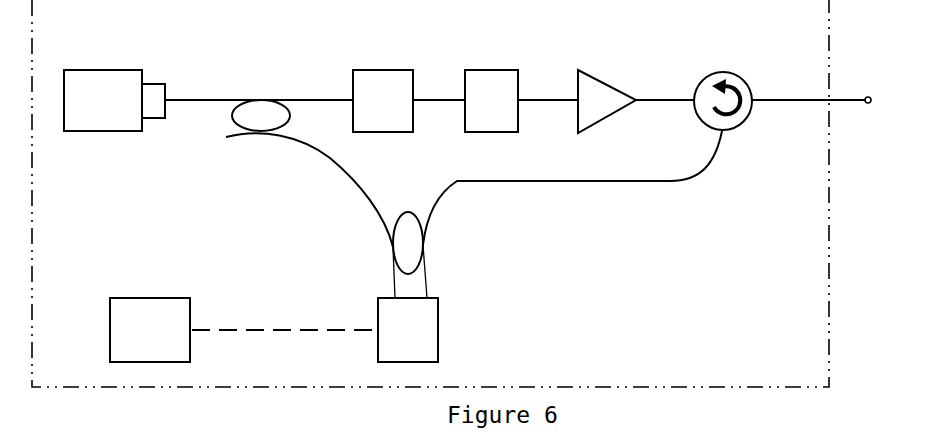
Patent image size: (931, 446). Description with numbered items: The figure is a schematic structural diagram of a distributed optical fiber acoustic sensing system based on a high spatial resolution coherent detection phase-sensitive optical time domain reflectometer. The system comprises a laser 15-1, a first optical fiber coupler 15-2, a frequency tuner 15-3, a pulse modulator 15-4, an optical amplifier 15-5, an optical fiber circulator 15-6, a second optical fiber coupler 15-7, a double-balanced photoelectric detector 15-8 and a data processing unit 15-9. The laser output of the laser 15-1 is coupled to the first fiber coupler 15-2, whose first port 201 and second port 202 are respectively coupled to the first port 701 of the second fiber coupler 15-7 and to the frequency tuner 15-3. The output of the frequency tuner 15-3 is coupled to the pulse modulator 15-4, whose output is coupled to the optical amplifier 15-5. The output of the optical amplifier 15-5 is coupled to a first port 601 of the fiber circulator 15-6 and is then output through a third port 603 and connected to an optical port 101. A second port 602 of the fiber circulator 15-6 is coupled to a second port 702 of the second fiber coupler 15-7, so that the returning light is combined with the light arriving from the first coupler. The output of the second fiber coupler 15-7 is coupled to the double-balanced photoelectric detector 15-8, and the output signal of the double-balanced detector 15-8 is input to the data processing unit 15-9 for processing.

The laser 15-1 is at (85, 70).
The first optical fiber coupler 15-2 is at (252, 98).
The frequency tuner 15-3 is at (386, 70).
The pulse modulator 15-4 is at (485, 70).
The optical amplifier 15-5 is at (601, 68).
The optical fiber circulator 15-6 is at (712, 72).
The second optical fiber coupler 15-7 is at (427, 247).
The double-balanced photoelectric detector 15-8 is at (438, 318).
The data processing unit 15-9 is at (122, 298).
The optical port 101 is at (886, 114).
The first port of the first fiber coupler 201 is at (309, 190).
The second port of the first fiber coupler 202 is at (259, 88).
The first port of the fiber circulator 601 is at (665, 87).
The second port of the fiber circulator 602 is at (716, 156).
The third port of the fiber circulator 603 is at (808, 87).
The first port of the second fiber coupler 701 is at (388, 264).
The second port of the second fiber coupler 702 is at (542, 207).